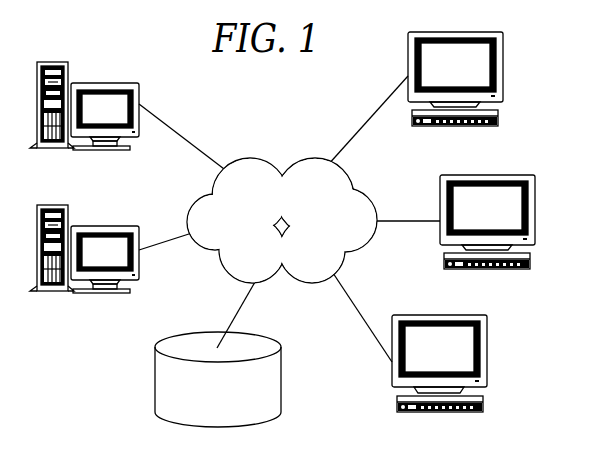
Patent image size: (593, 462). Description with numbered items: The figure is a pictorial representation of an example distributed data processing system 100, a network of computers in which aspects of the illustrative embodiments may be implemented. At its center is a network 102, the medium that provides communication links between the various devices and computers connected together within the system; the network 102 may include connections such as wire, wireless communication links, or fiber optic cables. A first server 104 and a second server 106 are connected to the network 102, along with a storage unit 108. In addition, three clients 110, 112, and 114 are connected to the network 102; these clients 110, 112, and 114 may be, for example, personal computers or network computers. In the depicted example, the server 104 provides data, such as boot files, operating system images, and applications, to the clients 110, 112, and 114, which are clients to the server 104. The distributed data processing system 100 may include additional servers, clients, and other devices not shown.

The distributed data processing system 100 is at (114, 357).
The network 102 is at (252, 158).
The server 104 is at (103, 83).
The server 106 is at (103, 226).
The storage unit 108 is at (282, 372).
The client 110 is at (503, 78).
The client 112 is at (535, 214).
The client 114 is at (488, 358).